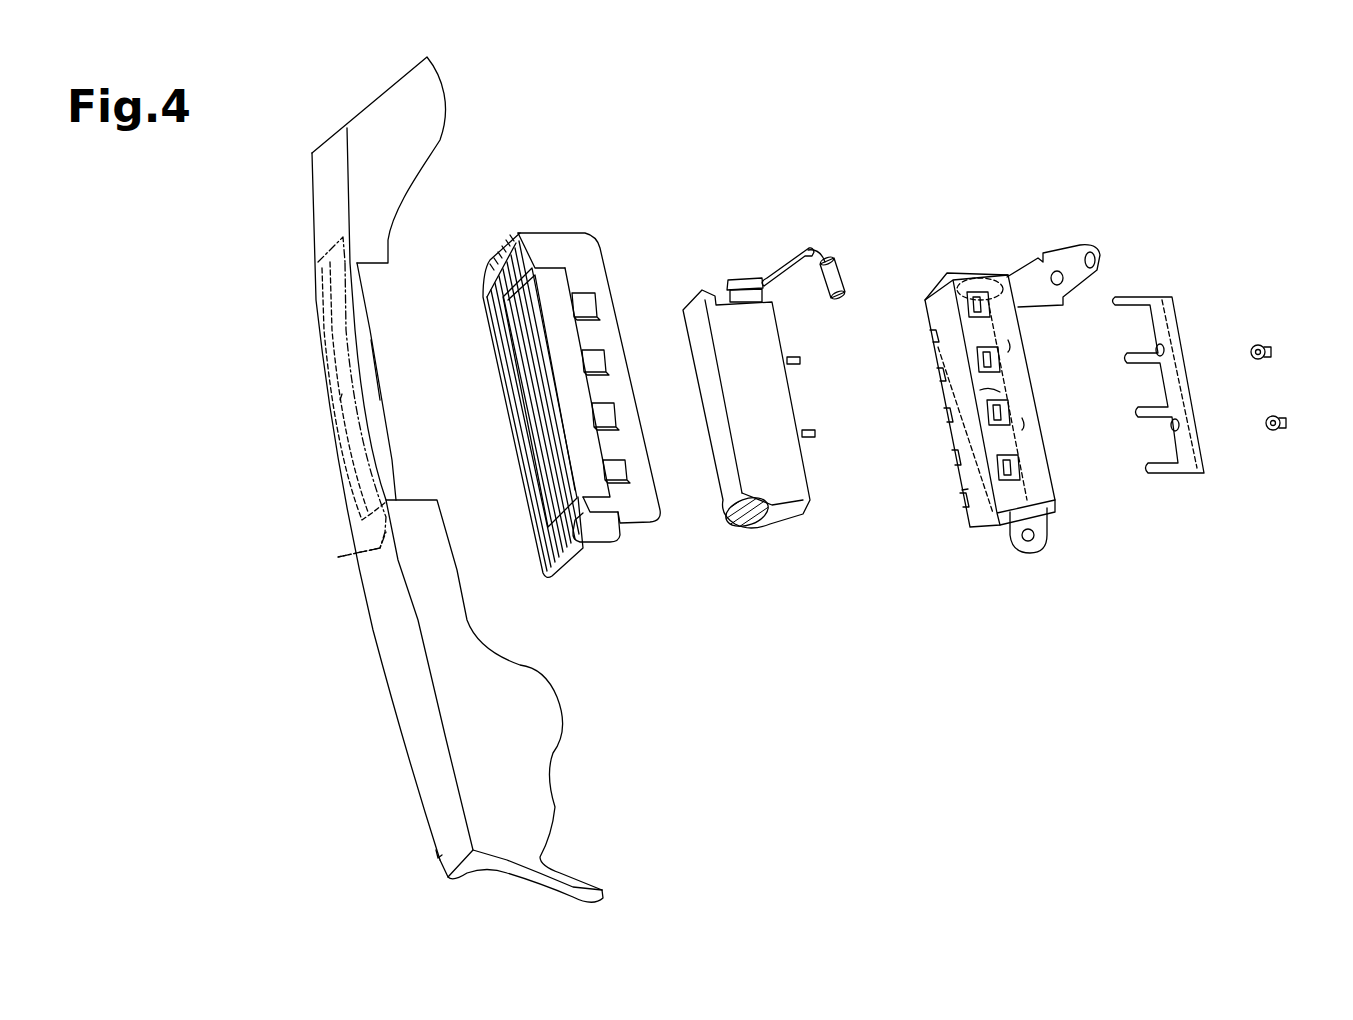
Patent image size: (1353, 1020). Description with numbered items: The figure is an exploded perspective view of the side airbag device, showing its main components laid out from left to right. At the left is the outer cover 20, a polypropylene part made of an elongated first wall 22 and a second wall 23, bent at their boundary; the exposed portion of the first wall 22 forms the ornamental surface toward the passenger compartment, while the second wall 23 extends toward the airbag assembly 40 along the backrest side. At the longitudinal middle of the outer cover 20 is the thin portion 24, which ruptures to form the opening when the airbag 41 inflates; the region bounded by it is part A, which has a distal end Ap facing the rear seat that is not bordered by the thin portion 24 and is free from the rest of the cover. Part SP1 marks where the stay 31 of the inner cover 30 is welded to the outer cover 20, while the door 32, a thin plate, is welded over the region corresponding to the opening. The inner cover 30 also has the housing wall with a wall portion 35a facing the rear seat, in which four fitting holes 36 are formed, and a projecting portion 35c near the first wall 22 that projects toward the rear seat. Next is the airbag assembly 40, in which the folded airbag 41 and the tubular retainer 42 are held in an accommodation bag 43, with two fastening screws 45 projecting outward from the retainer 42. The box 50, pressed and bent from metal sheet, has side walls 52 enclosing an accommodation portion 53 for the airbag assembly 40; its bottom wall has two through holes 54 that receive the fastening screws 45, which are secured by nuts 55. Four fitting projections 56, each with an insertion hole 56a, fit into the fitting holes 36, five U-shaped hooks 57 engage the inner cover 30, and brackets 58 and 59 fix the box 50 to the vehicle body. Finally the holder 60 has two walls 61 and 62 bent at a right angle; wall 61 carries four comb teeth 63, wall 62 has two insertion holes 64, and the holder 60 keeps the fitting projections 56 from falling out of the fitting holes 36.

The outer cover 20 is at (261, 128).
The first wall 22 is at (318, 175).
The second wall 23 is at (375, 112).
The thin portion 24 is at (318, 278).
The part A is at (343, 397).
The distal end Ap is at (370, 370).
The part SP1 is at (380, 549).
The inner cover 30 is at (556, 152).
The stay 31 is at (490, 358).
The door 32 is at (525, 418).
The wall portion 35a is at (580, 238).
The projecting portion 35c is at (553, 270).
The fitting hole 36 is at (629, 490).
The airbag assembly 40 is at (728, 222).
The airbag 41 is at (737, 530).
The retainer 42 is at (743, 275).
The accommodation bag 43 is at (810, 476).
The fastening screw 45 is at (808, 362).
The box 50 is at (970, 230).
The side wall 52 is at (1027, 385).
The accommodation portion 53 is at (979, 485).
The through hole 54 is at (1010, 343).
The fitting projection 56 is at (1010, 443).
The insertion hole 56a is at (975, 395).
The hook 57 is at (928, 332).
The bracket 58 is at (1083, 250).
The bracket 59 is at (1040, 553).
The holder 60 is at (1178, 268).
The wall 61 is at (1192, 485).
The wall 62 is at (1180, 383).
The comb tooth 63 is at (1163, 455).
The insertion hole 64 is at (1177, 338).
The nut 55 is at (1270, 352).